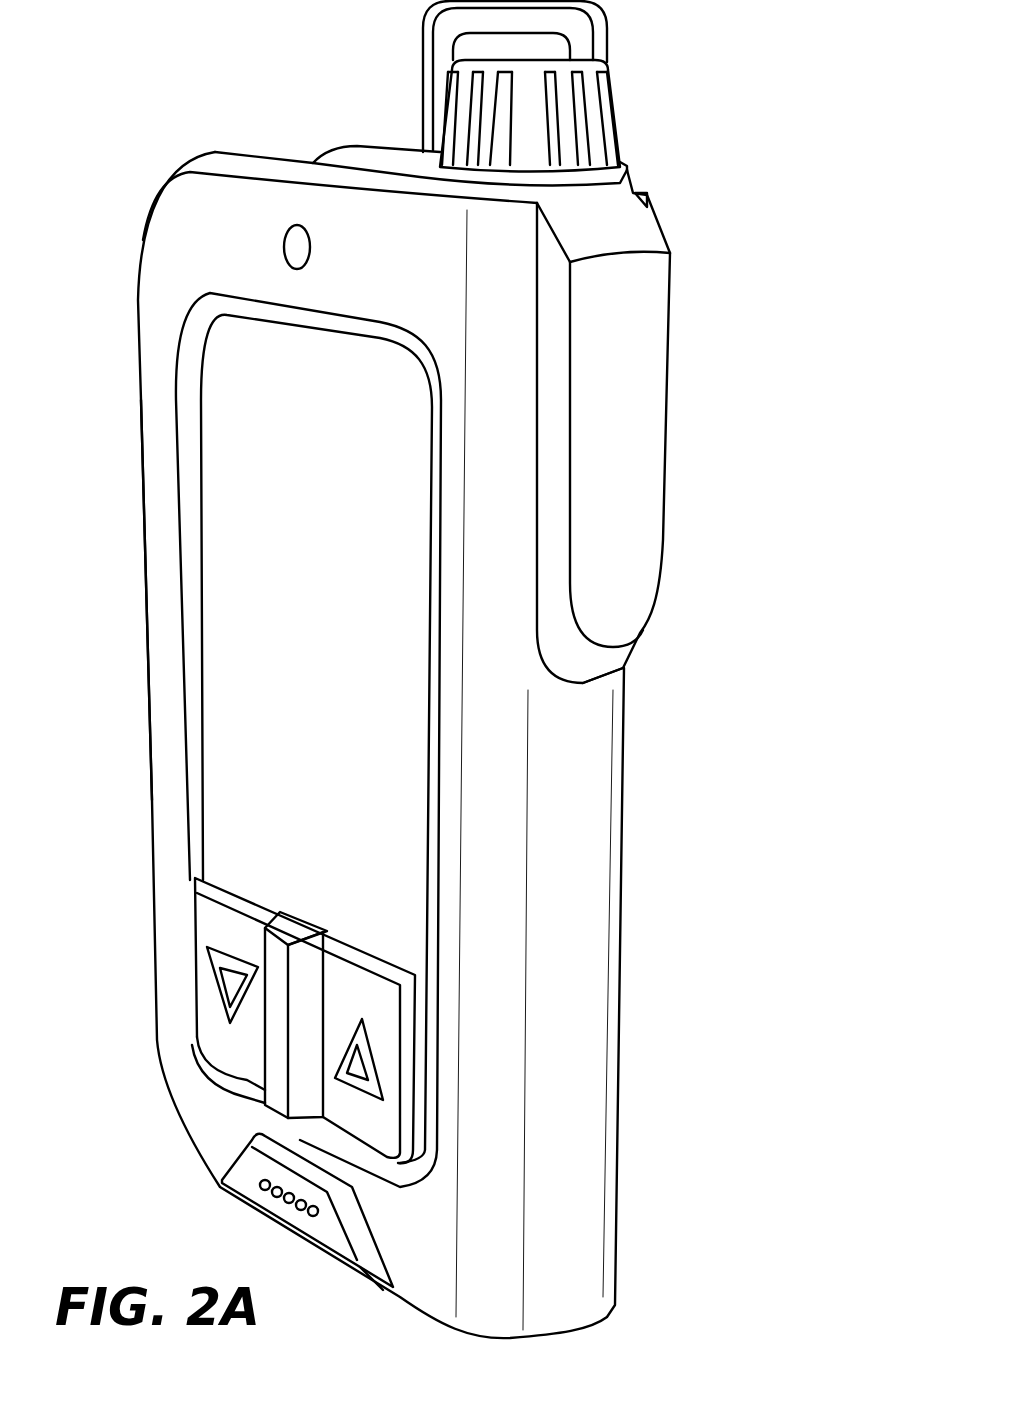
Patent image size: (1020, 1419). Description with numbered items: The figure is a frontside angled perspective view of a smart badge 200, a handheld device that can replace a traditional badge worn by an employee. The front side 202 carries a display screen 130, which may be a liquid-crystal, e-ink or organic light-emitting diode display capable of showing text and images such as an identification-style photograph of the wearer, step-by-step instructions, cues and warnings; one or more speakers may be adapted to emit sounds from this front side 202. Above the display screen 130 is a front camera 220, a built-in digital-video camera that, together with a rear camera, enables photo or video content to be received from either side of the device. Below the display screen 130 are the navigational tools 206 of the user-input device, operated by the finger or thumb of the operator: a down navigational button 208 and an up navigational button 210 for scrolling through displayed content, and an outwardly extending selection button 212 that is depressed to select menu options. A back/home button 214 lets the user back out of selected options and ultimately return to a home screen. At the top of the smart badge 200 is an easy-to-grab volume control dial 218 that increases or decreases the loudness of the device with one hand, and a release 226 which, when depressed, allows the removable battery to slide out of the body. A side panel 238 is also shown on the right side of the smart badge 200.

The smart badge 200 is at (436, 669).
The front side 202 is at (230, 227).
The navigational tools 206 is at (210, 998).
The down navigational button 208 is at (160, 738).
The up navigational button 210 is at (393, 1056).
The selection button 212 is at (272, 982).
The back/home button 214 is at (537, 1203).
The volume control dial 218 is at (614, 95).
The front camera 220 is at (298, 224).
The release 226 is at (598, 17).
The side panel 238 is at (648, 325).
The display screen 130 is at (213, 447).